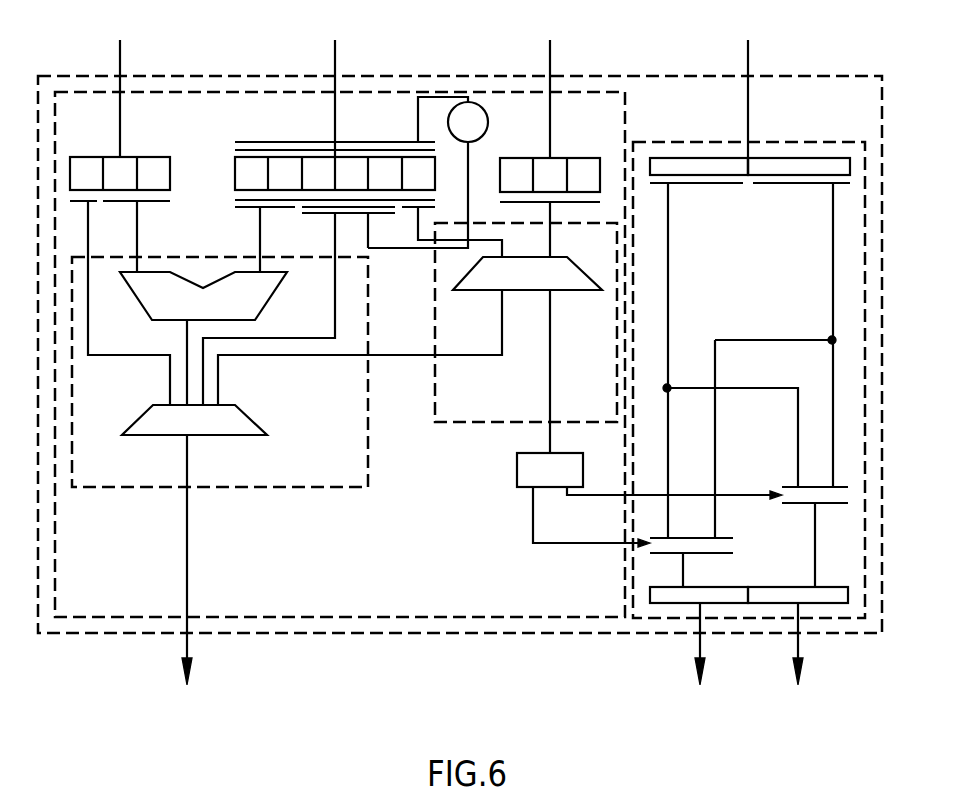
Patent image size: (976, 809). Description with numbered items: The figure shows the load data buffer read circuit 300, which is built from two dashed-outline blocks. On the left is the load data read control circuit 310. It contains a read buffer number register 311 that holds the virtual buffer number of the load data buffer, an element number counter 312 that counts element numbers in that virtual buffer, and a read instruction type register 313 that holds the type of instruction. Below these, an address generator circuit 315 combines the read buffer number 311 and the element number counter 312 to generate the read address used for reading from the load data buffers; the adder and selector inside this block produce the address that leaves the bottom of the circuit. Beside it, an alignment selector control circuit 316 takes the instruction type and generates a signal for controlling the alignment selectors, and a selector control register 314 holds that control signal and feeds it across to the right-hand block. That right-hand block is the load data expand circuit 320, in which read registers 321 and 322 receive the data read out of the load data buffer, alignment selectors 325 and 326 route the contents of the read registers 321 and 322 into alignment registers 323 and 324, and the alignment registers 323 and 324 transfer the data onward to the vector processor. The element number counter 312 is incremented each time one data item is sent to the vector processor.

The load data buffer read circuit 300 is at (622, 76).
The load data read control circuit 310 is at (268, 618).
The read buffer number register 311 is at (157, 157).
The element number counter 312 is at (278, 142).
The read instruction type register 313 is at (563, 158).
The selector control register 314 is at (525, 488).
The address generator circuit 315 is at (142, 488).
The alignment selector control circuit 316 is at (460, 422).
The load data expand circuit 320 is at (820, 142).
The read register 321 is at (693, 158).
The read register 322 is at (800, 158).
The alignment register 323 is at (677, 587).
The alignment register 324 is at (795, 586).
The alignment selector 325 is at (723, 538).
The alignment selector 326 is at (822, 504).